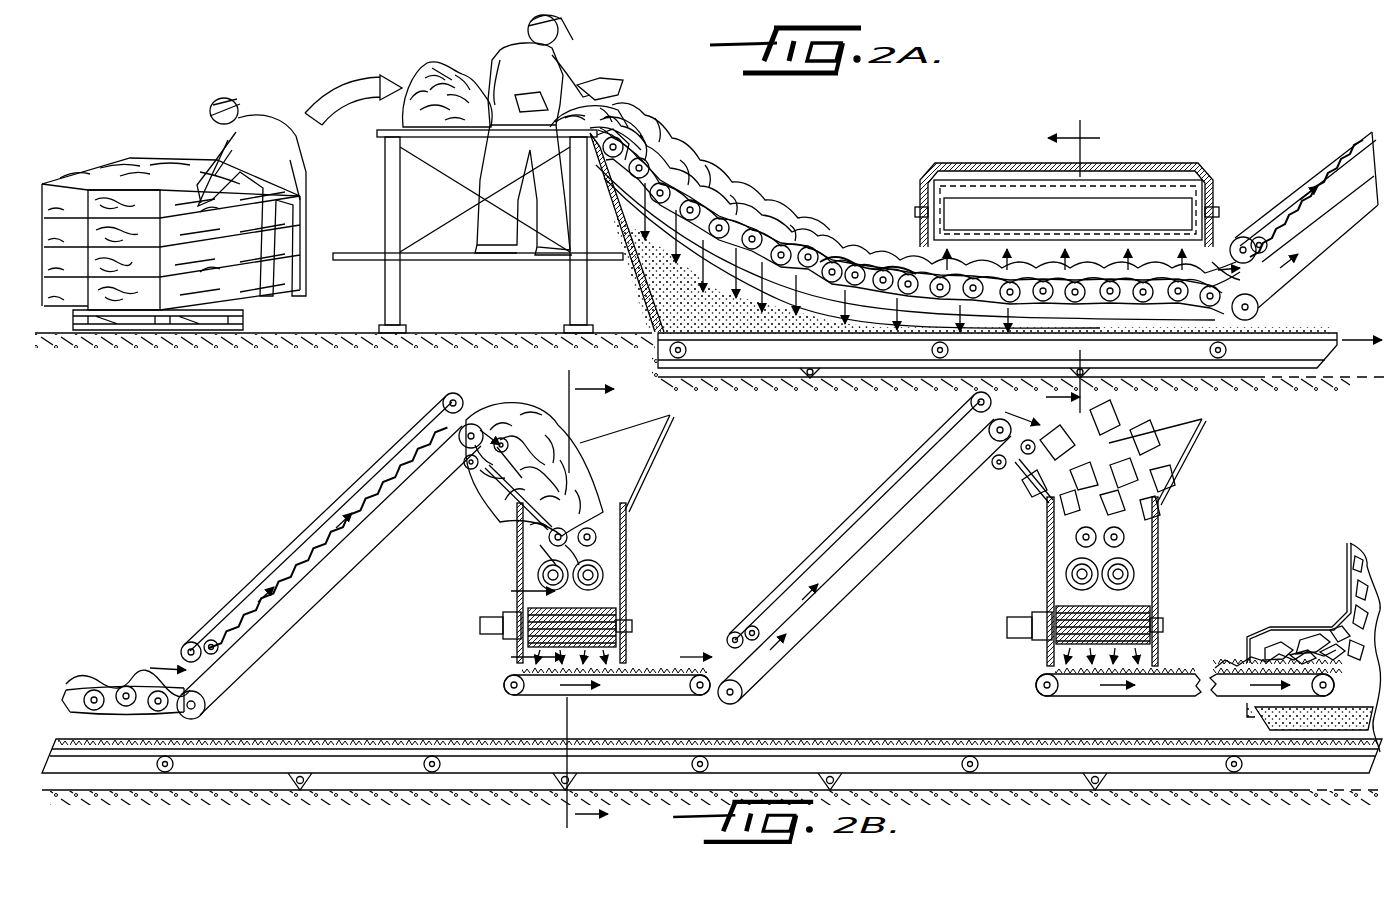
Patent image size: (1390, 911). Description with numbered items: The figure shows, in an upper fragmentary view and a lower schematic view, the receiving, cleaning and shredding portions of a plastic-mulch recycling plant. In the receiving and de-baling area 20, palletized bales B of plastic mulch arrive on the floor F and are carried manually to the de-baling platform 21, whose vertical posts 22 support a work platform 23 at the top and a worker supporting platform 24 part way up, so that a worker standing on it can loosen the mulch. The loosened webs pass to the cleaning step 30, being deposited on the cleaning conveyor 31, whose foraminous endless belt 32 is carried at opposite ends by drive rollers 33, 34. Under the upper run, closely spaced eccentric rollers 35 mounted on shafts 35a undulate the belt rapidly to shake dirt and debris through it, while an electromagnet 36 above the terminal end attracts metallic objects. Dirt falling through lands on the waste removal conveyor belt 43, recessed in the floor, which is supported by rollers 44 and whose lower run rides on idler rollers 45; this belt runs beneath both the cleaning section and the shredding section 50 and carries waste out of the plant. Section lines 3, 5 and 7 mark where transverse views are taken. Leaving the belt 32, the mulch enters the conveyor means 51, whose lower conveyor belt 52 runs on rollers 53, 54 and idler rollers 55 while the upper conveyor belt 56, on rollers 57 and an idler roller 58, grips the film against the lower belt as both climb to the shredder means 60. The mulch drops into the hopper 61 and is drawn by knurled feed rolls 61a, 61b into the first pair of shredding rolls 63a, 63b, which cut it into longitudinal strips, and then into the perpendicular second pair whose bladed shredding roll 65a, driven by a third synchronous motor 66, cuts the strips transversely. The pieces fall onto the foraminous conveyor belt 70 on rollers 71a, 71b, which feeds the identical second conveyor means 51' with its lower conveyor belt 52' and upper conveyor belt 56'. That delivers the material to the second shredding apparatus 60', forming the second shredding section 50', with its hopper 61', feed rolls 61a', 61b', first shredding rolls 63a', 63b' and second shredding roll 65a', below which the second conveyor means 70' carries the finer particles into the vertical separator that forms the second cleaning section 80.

In FIG. 2A, the bales B is at (168, 156).
In FIG. 2A, the floor F is at (761, 380).
In FIG. 2B, the floor F is at (228, 791).
In FIG. 2A, the section line 3- 3 is at (1081, 267).
In FIG. 2B, the section line 5- 5 is at (563, 599).
In FIG. 2B, the section line 7- 7 is at (524, 626).
In FIG. 2A, the receiving and de-baling area 20 is at (466, 58).
In FIG. 2A, the de-baling platform 21 is at (470, 231).
In FIG. 2A, the vertical posts 22 is at (567, 306).
In FIG. 2A, the work platform 23 is at (353, 101).
In FIG. 2A, the worker supporting platform 24 is at (372, 258).
In FIG. 2A, the cleaning step 30 is at (915, 208).
In FIG. 2B, the cleaning step 30 is at (102, 666).
In FIG. 2A, the cleaning conveyor 31 is at (781, 242).
In FIG. 2A, the endless belt 32 is at (960, 233).
In FIG. 2A, the drive roller 33 is at (628, 134).
In FIG. 2A, the drive roller 34 is at (1197, 305).
In FIG. 2A, the eccentric rollers 35 is at (762, 192).
In FIG. 2A, the shafts 35a is at (832, 266).
In FIG. 2A, the electromagnet 36 is at (1000, 198).
In FIG. 2A, the waste removal conveyor belt 43 is at (1020, 377).
In FIG. 2B, the waste removal conveyor belt 43 is at (712, 762).
In FIG. 2A, the rollers 44 is at (688, 357).
In FIG. 2B, the rollers 44 is at (434, 772).
In FIG. 2A, the idler rollers 45 is at (815, 375).
In FIG. 2B, the idler rollers 45 is at (307, 783).
In FIG. 2B, the shredding section 50 is at (544, 569).
In FIG. 2B, the second shredding station 50' is at (1138, 566).
In FIG. 2A, the conveyor means 51 is at (1302, 198).
In FIG. 2B, the conveyor means 51 is at (331, 546).
In FIG. 2B, the second conveyor means 51' is at (879, 548).
In FIG. 2A, the lower conveyor belt 52 is at (1318, 220).
In FIG. 2B, the lower conveyor belt 52 is at (331, 570).
In FIG. 2B, the lower conveyor belt 52' is at (866, 560).
In FIG. 2A, the roller 53 is at (1260, 302).
In FIG. 2B, the roller 53 is at (207, 706).
In FIG. 2B, the roller 54 is at (458, 435).
In FIG. 2B, the idler rollers 55 is at (528, 484).
In FIG. 2A, the upper conveyor belt 56 is at (1305, 192).
In FIG. 2B, the upper conveyor belt 56 is at (318, 523).
In FIG. 2B, the upper conveyor belt 56' is at (854, 517).
In FIG. 2A, the rollers 57 is at (1239, 237).
In FIG. 2B, the rollers 57 is at (446, 396).
In FIG. 2A, the idler roller 58 is at (1262, 237).
In FIG. 2B, the idler roller 58 is at (213, 640).
In FIG. 2B, the shredder means 60 is at (610, 579).
In FIG. 2B, the second shredding apparatus 60' is at (1146, 581).
In FIG. 2B, the hopper 61 is at (579, 466).
In FIG. 2B, the hopper 61' is at (1135, 460).
In FIG. 2B, the feed roll 61a is at (510, 548).
In FIG. 2B, the feed roll 61a' is at (1034, 524).
In FIG. 2B, the feed roll 61b is at (644, 535).
In FIG. 2B, the feed roll 61b' is at (1170, 523).
In FIG. 2B, the shredding roll 63a is at (638, 579).
In FIG. 2B, the first shredding roll 63a' is at (1169, 577).
In FIG. 2B, the shredding roll 63b is at (495, 577).
In FIG. 2B, the first shredding roll 63b' is at (1033, 583).
In FIG. 2B, the shredding roll 65a is at (619, 622).
In FIG. 2B, the second shredding roll 65a' is at (1146, 622).
In FIG. 2B, the third synchronous motor 66 is at (494, 629).
In FIG. 2B, the conveyor belt 70 is at (574, 696).
In FIG. 2B, the second conveyor means 70' is at (1189, 691).
In FIG. 2B, the roller 71a is at (697, 696).
In FIG. 2B, the roller 71b is at (509, 692).
In FIG. 2B, the second cleaning section 80 is at (1340, 588).